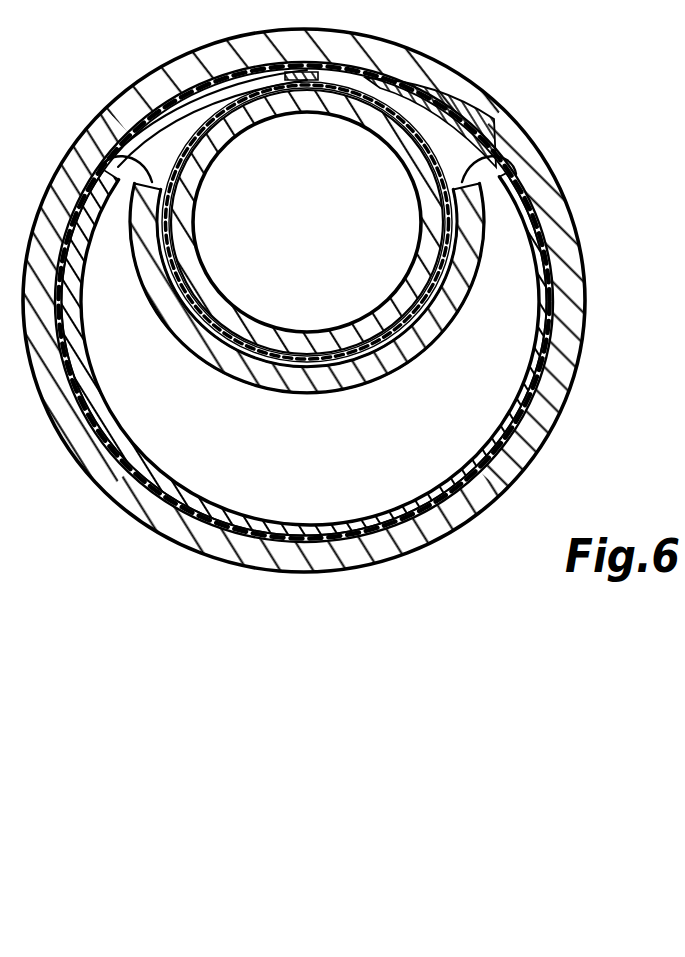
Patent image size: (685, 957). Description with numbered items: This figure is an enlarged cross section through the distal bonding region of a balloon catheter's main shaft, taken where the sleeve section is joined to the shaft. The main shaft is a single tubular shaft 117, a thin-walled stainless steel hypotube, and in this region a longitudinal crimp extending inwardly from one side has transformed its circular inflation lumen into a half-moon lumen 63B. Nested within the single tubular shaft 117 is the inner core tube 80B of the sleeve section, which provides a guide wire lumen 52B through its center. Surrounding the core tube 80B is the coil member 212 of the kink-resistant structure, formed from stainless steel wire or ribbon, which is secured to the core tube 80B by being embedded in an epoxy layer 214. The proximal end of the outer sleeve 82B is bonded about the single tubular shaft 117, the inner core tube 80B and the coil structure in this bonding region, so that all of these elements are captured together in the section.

The guide wire lumen 52B is at (350, 192).
The half-moon lumen 63B is at (296, 498).
The inner core tube 80B is at (255, 327).
The outer sleeve 82B is at (465, 498).
The single tubular shaft 117 is at (525, 458).
The coil member 212 is at (400, 78).
The epoxy layer 214 is at (450, 122).